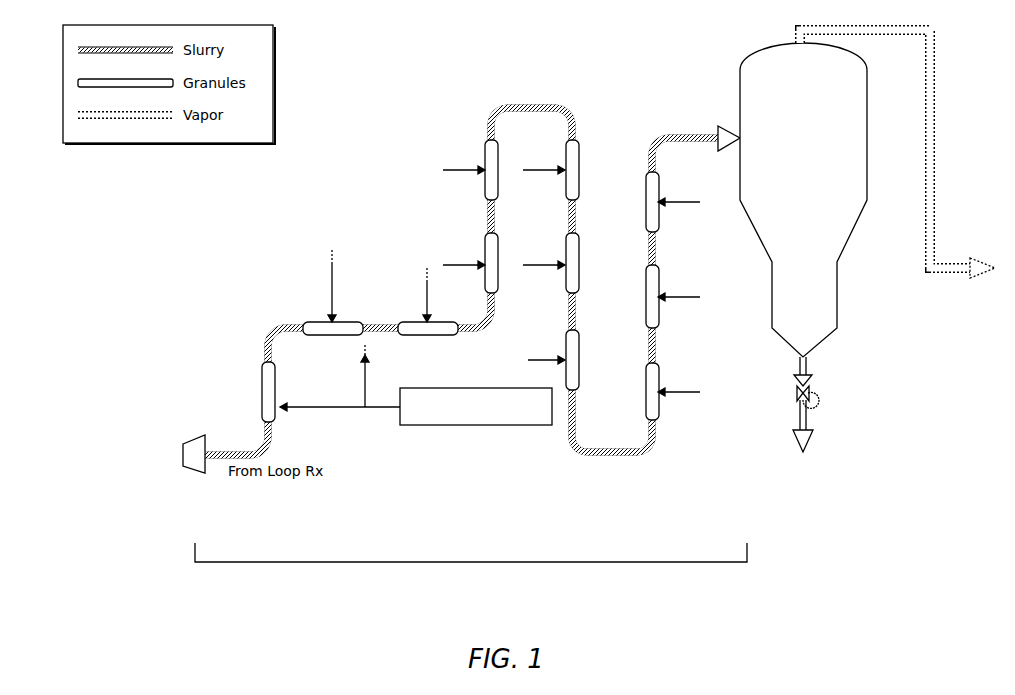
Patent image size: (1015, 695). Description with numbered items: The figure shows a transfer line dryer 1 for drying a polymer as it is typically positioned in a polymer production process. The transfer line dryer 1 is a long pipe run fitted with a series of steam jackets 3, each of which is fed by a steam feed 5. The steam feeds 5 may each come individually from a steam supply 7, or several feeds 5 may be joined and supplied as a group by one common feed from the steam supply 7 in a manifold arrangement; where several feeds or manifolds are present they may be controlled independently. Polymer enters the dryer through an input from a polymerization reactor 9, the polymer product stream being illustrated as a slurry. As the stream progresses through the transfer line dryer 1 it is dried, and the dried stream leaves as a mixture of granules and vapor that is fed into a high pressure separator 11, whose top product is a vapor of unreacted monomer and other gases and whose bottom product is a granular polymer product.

The transfer line dryer 1 is at (470, 562).
The steam jacket 3 is at (262, 392).
The steam feed 5 is at (462, 168).
The steam supply 7 is at (526, 388).
The polymerization reactor 9 is at (183, 450).
The high pressure separator 11 is at (825, 163).